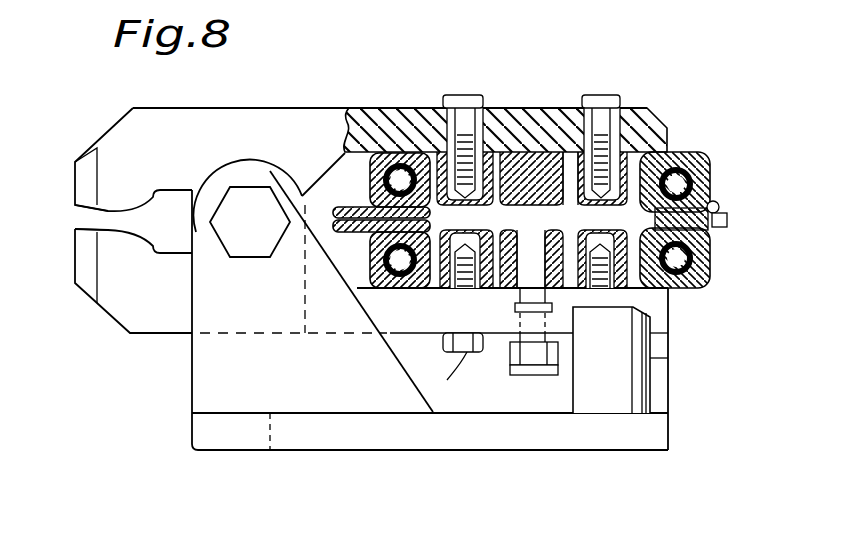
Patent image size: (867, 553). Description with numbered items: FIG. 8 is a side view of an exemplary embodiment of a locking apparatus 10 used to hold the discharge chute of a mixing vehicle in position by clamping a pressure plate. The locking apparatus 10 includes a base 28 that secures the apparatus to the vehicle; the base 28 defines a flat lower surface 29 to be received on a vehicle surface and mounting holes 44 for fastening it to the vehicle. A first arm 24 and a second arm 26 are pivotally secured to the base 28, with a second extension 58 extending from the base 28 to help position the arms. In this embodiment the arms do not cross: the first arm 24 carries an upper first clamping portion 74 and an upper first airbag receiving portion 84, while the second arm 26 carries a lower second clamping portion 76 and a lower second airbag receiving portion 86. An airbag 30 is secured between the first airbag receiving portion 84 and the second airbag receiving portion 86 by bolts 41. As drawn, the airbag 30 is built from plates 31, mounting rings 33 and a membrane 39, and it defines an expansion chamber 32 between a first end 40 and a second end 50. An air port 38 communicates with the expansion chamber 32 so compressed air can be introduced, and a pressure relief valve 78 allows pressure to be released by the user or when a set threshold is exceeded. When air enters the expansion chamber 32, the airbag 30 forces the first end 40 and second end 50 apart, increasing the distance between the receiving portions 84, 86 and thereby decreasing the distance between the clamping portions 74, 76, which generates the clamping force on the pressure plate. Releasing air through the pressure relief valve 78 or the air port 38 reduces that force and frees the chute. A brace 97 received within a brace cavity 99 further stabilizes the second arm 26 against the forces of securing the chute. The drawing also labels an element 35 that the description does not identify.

The locking apparatus 10 is at (703, 295).
The first arm 24 is at (158, 128).
The second arm 26 is at (127, 302).
The base 28 is at (210, 433).
The flat lower surface 29 is at (503, 453).
The airbag 30 is at (707, 167).
The plates 31 is at (407, 137).
The expansion chamber 32 is at (533, 220).
The mounting rings 33 is at (357, 277).
The hex pivot bolt 35 is at (252, 210).
The air port 38 is at (533, 378).
The membrane 39 is at (357, 207).
The first end 40 is at (507, 150).
The bolts 41 is at (462, 95).
The mounting holes 44 is at (292, 443).
The second end 50 is at (430, 290).
The second extension 58 is at (225, 378).
The first clamping portion 74 is at (110, 213).
The second clamping portion 76 is at (110, 230).
The pressure relief valve 78 is at (727, 208).
The first airbag receiving portion 84 is at (566, 153).
The second airbag receiving portion 86 is at (487, 288).
The brace 97 is at (684, 360).
The brace cavity 99 is at (670, 360).